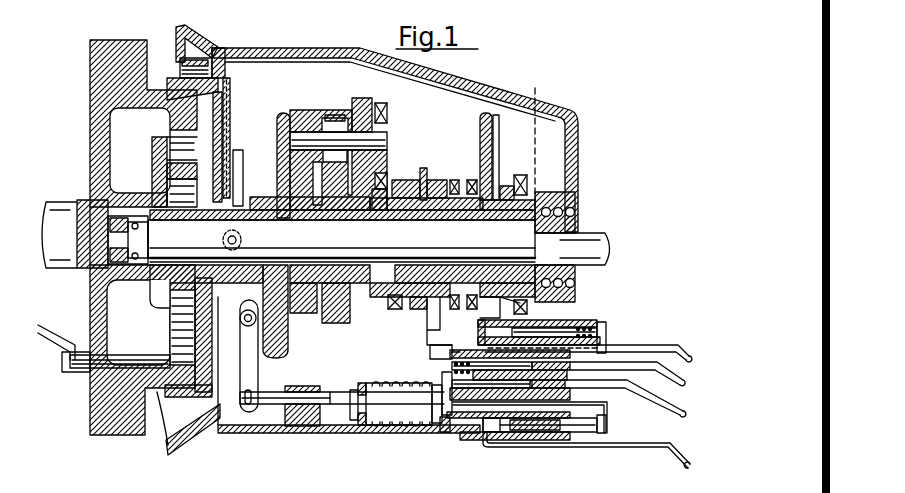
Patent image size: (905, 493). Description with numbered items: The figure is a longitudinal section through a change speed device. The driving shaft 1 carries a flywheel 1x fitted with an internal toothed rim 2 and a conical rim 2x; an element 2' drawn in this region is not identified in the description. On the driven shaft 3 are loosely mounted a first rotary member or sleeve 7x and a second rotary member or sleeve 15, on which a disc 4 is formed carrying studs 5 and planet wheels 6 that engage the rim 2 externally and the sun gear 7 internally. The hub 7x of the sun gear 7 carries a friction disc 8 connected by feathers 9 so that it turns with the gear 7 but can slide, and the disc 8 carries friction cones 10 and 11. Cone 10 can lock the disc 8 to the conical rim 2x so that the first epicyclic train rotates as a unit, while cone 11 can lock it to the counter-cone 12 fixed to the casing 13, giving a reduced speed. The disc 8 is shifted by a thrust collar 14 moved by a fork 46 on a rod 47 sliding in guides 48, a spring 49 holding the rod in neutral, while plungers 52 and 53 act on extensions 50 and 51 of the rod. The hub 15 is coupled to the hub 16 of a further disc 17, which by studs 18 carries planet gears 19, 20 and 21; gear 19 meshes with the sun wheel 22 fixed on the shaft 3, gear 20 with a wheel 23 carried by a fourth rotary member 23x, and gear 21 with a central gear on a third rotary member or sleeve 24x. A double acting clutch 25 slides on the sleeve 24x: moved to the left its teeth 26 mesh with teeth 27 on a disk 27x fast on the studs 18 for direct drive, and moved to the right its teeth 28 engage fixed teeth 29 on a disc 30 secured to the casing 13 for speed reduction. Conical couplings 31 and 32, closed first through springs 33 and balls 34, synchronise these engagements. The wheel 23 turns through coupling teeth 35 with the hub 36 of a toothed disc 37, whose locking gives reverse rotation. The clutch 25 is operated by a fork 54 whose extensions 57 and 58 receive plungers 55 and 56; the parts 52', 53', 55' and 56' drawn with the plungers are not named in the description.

The driving shaft 1 is at (51, 212).
The flywheel 1x is at (90, 66).
The internal toothed rim 2 is at (518, 131).
The clutch plate 2' is at (188, 138).
The conical rim 2x is at (160, 432).
The driven shaft 3 is at (592, 235).
The disc 4 is at (152, 166).
The studs 5 is at (152, 146).
The planet wheels 6 is at (160, 182).
The sun gear 7 is at (160, 298).
The first rotary member 7x is at (172, 312).
The friction clutch disc 8 is at (222, 122).
The feathers 9 is at (182, 222).
The friction cone 10 is at (146, 107).
The friction cone 11 is at (180, 72).
The counter-cone 12 is at (183, 47).
The fixed casing 13 is at (272, 52).
The thrust collar 14 is at (238, 184).
The second rotary member 15 is at (152, 226).
The hub 16 is at (256, 221).
The disc 17 is at (278, 128).
The studs 18 is at (385, 140).
The planet gear 19 is at (300, 110).
The planet wheel 20 is at (333, 116).
The planet wheel 21 is at (362, 108).
The sun wheel 22 is at (300, 180).
The wheel 23 is at (302, 226).
The fourth rotary member 23x is at (318, 312).
The third rotary member 24x is at (390, 318).
The double acting clutch 25 is at (440, 178).
The teeth 26 is at (404, 180).
The teeth 27 is at (386, 168).
The disk 27x is at (382, 103).
The teeth 28 is at (446, 180).
The fixed teeth 29 is at (456, 180).
The disc 30 is at (493, 143).
The conical coupling 31 is at (372, 302).
The conical coupling 32 is at (500, 222).
The springs 33 is at (410, 222).
The balls 34 is at (424, 168).
The coupling teeth 35 is at (382, 224).
The hub 36 is at (458, 226).
The toothed disc 37 is at (530, 188).
The fork 46 is at (222, 240).
The rod 47 is at (326, 394).
The guides 48 is at (292, 392).
The spring 49 is at (360, 392).
The extension 50 is at (440, 380).
The extension 51 is at (606, 422).
The plunger 52 is at (502, 402).
The control rod end 52' is at (568, 395).
The plunger 53 is at (586, 453).
The control rod end 53' is at (630, 462).
The fork 54 is at (428, 338).
The plunger 55 is at (560, 323).
The control rod end 55' is at (588, 339).
The plunger 56 is at (525, 347).
The control rod end 56' is at (627, 376).
The extension 57 is at (606, 328).
The extension 58 is at (430, 354).